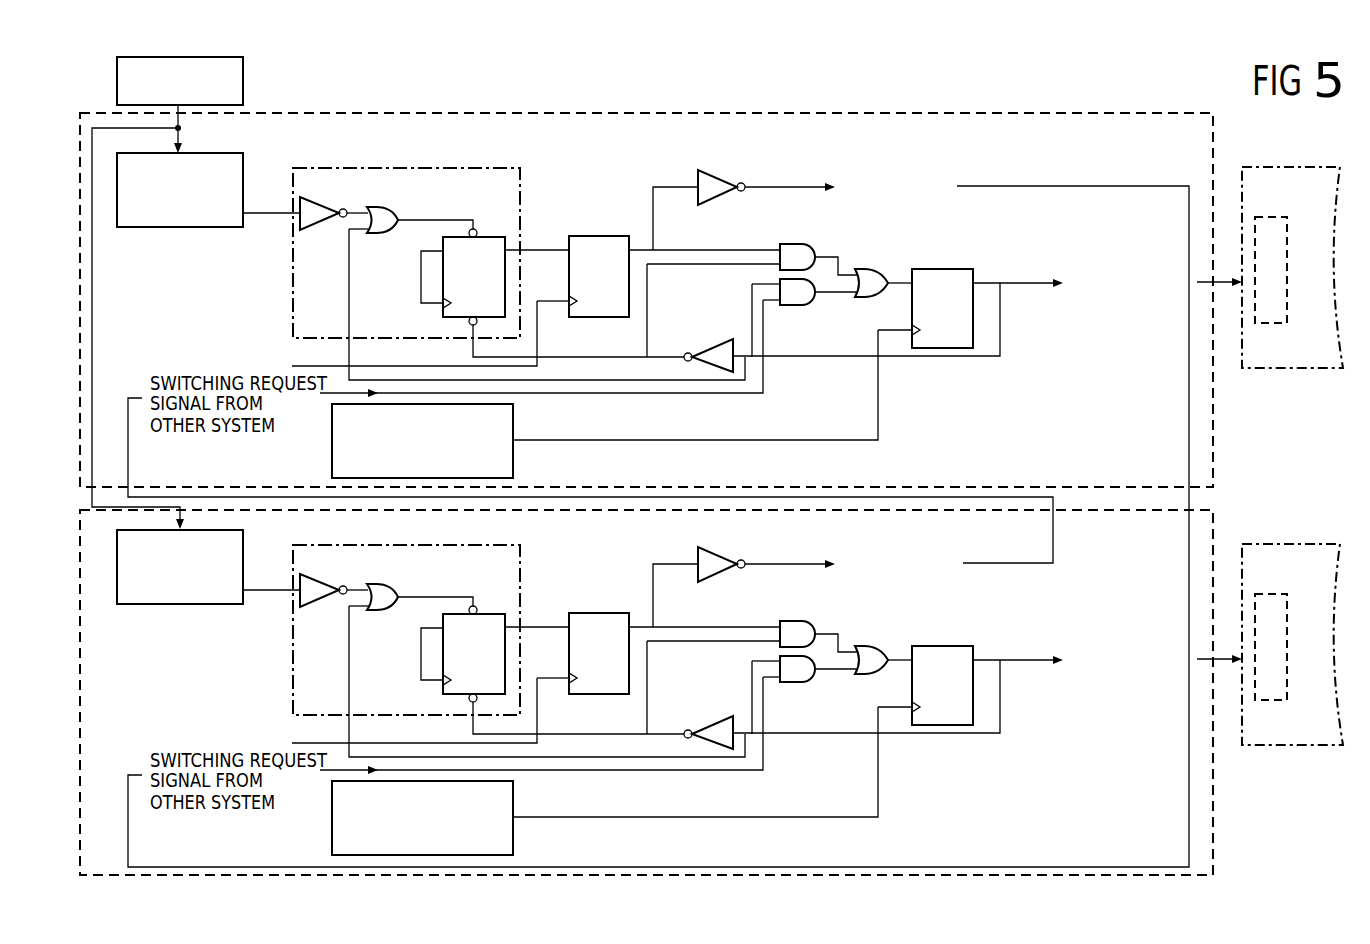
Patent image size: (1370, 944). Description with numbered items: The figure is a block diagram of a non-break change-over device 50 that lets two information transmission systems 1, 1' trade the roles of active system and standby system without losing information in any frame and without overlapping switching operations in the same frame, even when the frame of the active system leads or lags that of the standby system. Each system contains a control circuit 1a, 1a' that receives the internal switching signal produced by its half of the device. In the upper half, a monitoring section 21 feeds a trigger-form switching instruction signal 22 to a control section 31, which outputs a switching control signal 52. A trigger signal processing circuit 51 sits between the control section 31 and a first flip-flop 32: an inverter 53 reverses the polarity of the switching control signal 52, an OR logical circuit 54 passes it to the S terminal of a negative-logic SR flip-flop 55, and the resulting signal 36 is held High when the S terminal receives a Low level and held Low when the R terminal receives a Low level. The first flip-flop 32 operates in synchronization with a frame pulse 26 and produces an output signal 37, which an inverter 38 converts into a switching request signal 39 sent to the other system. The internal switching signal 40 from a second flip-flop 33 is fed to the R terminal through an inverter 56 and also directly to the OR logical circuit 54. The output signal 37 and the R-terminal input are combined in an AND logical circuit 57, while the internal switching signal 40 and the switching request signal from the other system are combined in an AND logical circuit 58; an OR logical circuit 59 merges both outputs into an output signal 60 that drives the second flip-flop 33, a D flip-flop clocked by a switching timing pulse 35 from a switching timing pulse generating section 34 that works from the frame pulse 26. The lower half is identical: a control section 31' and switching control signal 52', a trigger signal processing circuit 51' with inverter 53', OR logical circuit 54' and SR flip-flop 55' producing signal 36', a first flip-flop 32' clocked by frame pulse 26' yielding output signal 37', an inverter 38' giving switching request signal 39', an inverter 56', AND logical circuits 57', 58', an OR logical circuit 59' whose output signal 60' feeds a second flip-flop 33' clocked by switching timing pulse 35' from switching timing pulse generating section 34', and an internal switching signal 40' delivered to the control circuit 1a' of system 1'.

The information transmission system 1 is at (1292, 257).
The control circuit 1a is at (1280, 252).
The monitoring section 21 is at (243, 76).
The switching instruction signal 22 is at (301, 317).
The frame pulse 26 is at (352, 335).
The control section 31 is at (199, 184).
The first flip-flop 32 is at (589, 260).
The second flip-flop 33 is at (932, 293).
The switching timing pulse generating section 34 is at (448, 441).
The switching timing pulse 35 is at (695, 385).
The signal 36 is at (537, 232).
The output signal 37 is at (704, 218).
The inverter 38 is at (722, 177).
The switching request signal 39 is at (658, 504).
The internal switching signal 40 is at (987, 297).
The non-break change-over device 50 is at (948, 178).
The trigger signal processing circuit 51 is at (406, 239).
The switching control signal 52 is at (204, 243).
The inverter 53 is at (334, 203).
The OR logical circuit 54 is at (411, 204).
The SR flip-flop 55 is at (549, 283).
The inverter 56 is at (708, 345).
The AND logical circuit 57 is at (752, 285).
The AND logical circuit 58 is at (588, 313).
The OR logical circuit 59 is at (874, 266).
The output signal 60 is at (909, 264).
The information transmission system 1' is at (1292, 625).
The control circuit 1a' is at (1283, 629).
The frame pulse 26' is at (352, 712).
The control section 31' is at (201, 561).
The first flip-flop 32' is at (592, 637).
The second flip-flop 33' is at (934, 670).
The switching timing pulse generating section 34' is at (451, 818).
The switching timing pulse 35' is at (695, 762).
The signal 36' is at (537, 609).
The output signal 37' is at (704, 595).
The inverter 38' is at (724, 554).
The switching request signal 39' is at (590, 501).
The internal switching signal 40' is at (987, 674).
The trigger signal processing circuit 51' is at (406, 616).
The switching control signal 52' is at (204, 620).
The inverter 53' is at (334, 580).
The OR logical circuit 54' is at (411, 581).
The SR flip-flop 55' is at (549, 660).
The inverter 56' is at (708, 722).
The AND logical circuit 57' is at (752, 662).
The AND logical circuit 58' is at (588, 690).
The OR logical circuit 59' is at (877, 643).
The output signal 60' is at (912, 641).